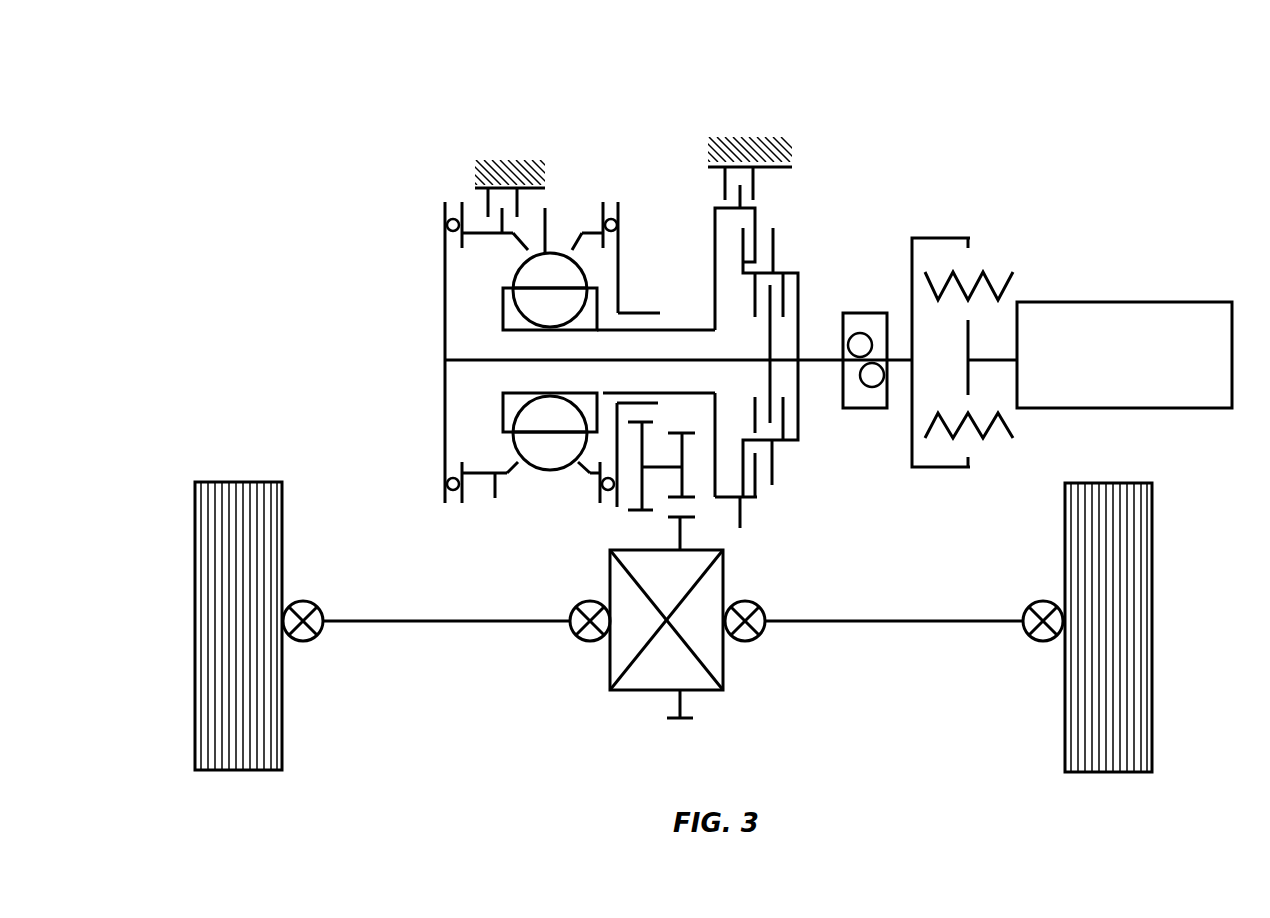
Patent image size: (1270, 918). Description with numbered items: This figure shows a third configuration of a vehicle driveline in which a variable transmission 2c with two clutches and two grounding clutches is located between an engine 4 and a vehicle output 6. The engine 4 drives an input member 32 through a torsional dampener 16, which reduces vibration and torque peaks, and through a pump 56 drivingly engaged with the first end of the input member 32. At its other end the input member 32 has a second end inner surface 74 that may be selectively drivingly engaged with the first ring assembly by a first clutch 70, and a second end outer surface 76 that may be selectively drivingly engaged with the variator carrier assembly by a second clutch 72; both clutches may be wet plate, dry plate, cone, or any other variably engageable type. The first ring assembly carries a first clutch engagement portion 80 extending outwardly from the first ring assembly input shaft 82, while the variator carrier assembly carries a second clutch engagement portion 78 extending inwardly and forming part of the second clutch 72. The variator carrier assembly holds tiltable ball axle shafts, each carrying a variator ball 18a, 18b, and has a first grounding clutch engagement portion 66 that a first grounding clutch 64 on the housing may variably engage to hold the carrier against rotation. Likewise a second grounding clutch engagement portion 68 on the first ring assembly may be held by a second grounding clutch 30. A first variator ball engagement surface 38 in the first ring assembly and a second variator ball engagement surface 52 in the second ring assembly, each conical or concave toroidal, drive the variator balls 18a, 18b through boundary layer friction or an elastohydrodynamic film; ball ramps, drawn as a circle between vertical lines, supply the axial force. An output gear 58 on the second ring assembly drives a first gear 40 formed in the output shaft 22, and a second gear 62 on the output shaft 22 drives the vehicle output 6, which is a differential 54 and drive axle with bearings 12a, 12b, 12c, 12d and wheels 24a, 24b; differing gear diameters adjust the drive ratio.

The variable transmission 2c is at (703, 112).
The engine 4 is at (1146, 302).
The vehicle output 6 is at (678, 745).
The bearing 12a is at (312, 641).
The bearing 12b is at (585, 641).
The bearing 12c is at (752, 641).
The bearing 12d is at (1040, 643).
The torsional dampener 16 is at (972, 218).
The variator ball 18a is at (555, 253).
The variator ball 18b is at (540, 472).
The output shaft 22 is at (662, 468).
The wheel 24a is at (250, 482).
The wheel 24b is at (1120, 483).
The second grounding clutch 30 is at (520, 135).
The input member 32 is at (812, 356).
The first variator ball engagement surface 38 is at (523, 247).
The first gear 40 is at (632, 495).
The second variator ball engagement surface 52 is at (571, 248).
The differential 54 is at (723, 690).
The pump 56 is at (863, 313).
The output gear 58 is at (660, 397).
The second gear 62 is at (683, 478).
The first grounding clutch 64 is at (755, 125).
The first grounding clutch engagement portion 66 is at (735, 205).
The second grounding clutch engagement portion 68 is at (498, 222).
The first clutch 70 is at (806, 265).
The second clutch 72 is at (778, 228).
The second end inner surface 74 is at (790, 270).
The second end outer surface 76 is at (770, 290).
The second clutch engagement portion 78 is at (762, 262).
The first clutch engagement portion 80 is at (768, 328).
The first ring assembly input shaft 82 is at (672, 358).